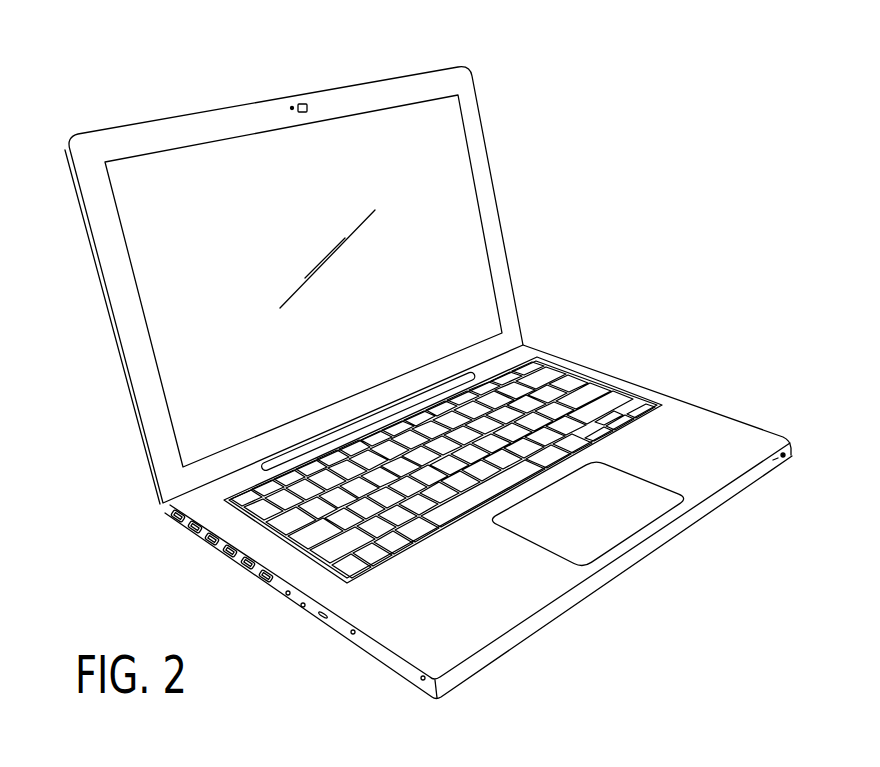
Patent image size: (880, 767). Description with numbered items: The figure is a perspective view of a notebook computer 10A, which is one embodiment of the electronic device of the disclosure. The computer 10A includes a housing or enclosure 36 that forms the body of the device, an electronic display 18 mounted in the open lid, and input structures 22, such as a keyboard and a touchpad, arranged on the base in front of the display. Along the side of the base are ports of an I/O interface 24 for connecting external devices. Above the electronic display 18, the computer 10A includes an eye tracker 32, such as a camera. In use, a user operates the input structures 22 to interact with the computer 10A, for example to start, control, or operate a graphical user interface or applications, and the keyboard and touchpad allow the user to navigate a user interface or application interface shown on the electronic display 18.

The notebook computer 10A is at (427, 363).
The electronic display 18 is at (463, 220).
The input structures 22 is at (583, 390).
The I/O interface 24 is at (252, 577).
The eye tracker 32 is at (311, 106).
The housing or enclosure 36 is at (661, 392).